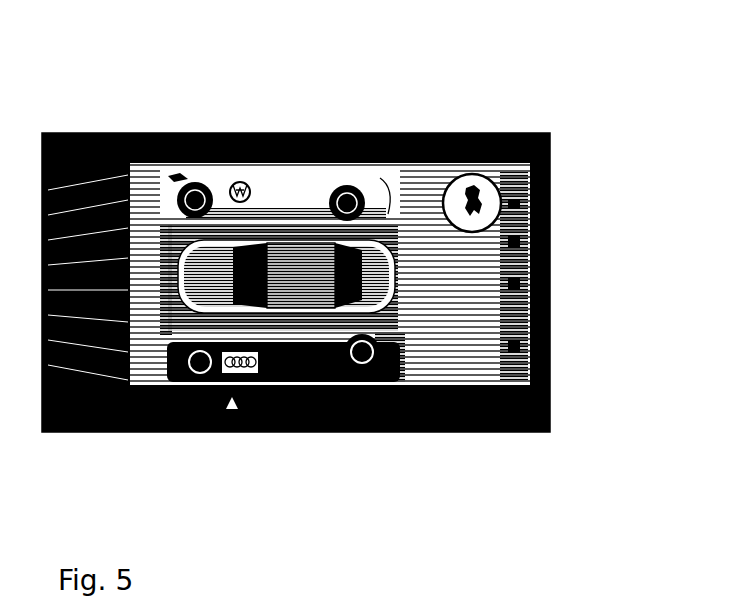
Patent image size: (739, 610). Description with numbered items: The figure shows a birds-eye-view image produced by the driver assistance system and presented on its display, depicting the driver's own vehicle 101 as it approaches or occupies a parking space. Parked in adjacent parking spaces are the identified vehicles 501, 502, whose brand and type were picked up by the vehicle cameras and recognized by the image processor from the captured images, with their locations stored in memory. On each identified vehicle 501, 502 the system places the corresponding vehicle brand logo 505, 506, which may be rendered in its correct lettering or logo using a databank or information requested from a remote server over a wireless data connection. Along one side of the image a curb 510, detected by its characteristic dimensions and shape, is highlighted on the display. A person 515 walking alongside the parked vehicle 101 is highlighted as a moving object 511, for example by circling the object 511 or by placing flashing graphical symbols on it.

The vehicle 101 is at (380, 283).
The identified vehicle 501 is at (384, 193).
The identified vehicle 502 is at (465, 430).
The vehicle brand logo 505 is at (242, 182).
The vehicle brand logo 506 is at (240, 380).
The curb 510 is at (163, 253).
The moving object 511 is at (472, 199).
The person 515 is at (487, 180).